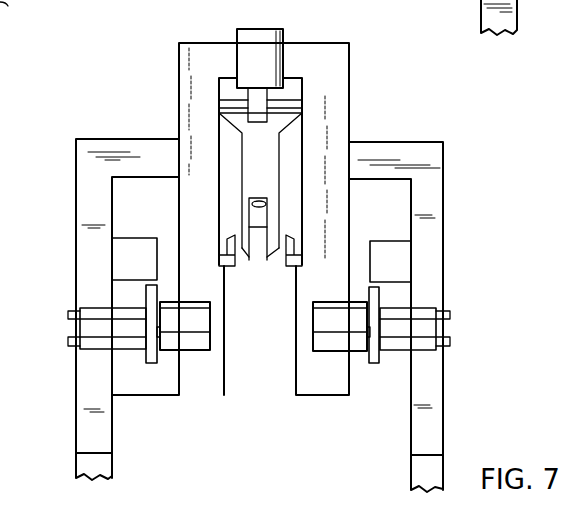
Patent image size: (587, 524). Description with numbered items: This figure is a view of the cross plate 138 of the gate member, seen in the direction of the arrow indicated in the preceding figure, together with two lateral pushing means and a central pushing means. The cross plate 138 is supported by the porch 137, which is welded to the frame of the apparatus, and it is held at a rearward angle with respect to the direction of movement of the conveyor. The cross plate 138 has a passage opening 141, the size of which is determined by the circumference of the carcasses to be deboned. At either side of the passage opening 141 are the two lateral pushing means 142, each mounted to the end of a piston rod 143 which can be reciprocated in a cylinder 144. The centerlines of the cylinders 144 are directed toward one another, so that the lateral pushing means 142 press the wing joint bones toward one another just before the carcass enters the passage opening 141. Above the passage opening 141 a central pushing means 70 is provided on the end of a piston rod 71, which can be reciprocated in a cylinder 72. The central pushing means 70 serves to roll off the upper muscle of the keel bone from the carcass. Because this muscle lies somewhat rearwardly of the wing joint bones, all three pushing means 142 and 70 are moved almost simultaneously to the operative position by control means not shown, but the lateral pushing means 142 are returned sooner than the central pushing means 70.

The central pushing means 70 is at (235, 160).
The piston rod 71 is at (250, 100).
The cylinder 72 is at (253, 38).
The porch 137 is at (428, 242).
The cross plate 138 is at (337, 108).
The passage opening 141 is at (270, 285).
The lateral pushing means 142 is at (193, 342).
The piston rod 143 is at (170, 340).
The cylinder 144 is at (120, 330).